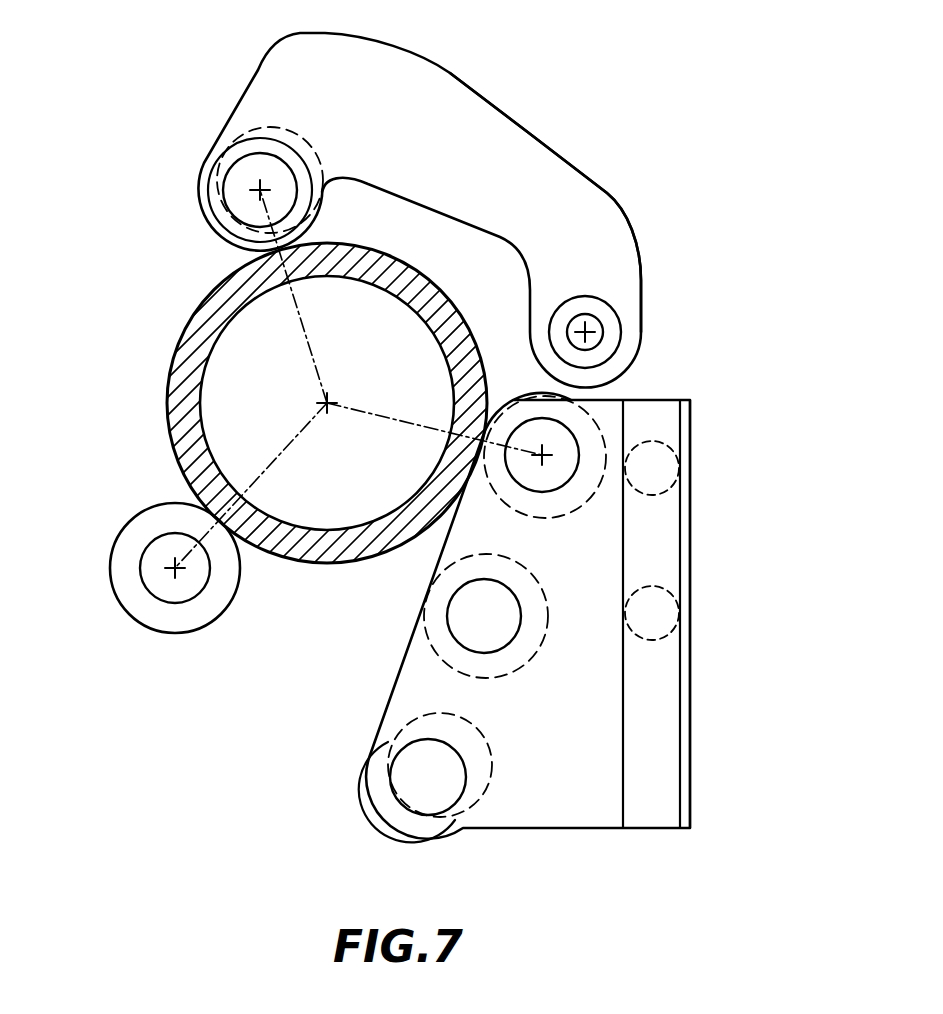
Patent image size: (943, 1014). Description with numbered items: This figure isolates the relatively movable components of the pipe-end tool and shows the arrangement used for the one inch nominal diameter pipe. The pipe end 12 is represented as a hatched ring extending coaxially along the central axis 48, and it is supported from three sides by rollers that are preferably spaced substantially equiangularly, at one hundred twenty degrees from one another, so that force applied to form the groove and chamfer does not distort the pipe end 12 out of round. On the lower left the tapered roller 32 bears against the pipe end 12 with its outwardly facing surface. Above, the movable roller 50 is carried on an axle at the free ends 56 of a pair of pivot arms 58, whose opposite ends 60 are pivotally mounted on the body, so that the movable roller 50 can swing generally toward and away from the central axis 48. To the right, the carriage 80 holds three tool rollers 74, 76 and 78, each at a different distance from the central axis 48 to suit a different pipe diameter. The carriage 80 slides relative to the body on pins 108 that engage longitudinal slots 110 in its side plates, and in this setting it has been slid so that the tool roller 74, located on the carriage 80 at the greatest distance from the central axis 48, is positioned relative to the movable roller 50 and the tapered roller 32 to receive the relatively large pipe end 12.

The pipe end 12 is at (208, 302).
The central axis 48 is at (337, 397).
The free ends 56 is at (253, 92).
The pivot arms 58 is at (527, 140).
The movable roller 50 is at (201, 168).
The opposite ends 60 is at (643, 323).
The tapered roller 32 is at (127, 598).
The tool roller 74 is at (527, 388).
The tool roller 76 is at (420, 607).
The tool roller 78 is at (363, 780).
The carriage 80 is at (558, 807).
The pins 108 is at (666, 447).
The longitudinal slots 110 is at (665, 780).